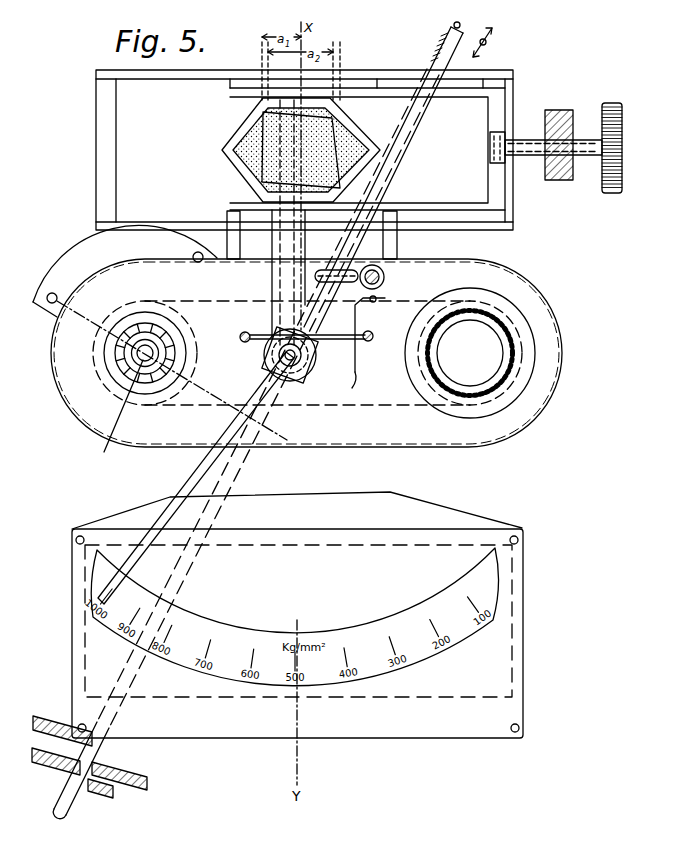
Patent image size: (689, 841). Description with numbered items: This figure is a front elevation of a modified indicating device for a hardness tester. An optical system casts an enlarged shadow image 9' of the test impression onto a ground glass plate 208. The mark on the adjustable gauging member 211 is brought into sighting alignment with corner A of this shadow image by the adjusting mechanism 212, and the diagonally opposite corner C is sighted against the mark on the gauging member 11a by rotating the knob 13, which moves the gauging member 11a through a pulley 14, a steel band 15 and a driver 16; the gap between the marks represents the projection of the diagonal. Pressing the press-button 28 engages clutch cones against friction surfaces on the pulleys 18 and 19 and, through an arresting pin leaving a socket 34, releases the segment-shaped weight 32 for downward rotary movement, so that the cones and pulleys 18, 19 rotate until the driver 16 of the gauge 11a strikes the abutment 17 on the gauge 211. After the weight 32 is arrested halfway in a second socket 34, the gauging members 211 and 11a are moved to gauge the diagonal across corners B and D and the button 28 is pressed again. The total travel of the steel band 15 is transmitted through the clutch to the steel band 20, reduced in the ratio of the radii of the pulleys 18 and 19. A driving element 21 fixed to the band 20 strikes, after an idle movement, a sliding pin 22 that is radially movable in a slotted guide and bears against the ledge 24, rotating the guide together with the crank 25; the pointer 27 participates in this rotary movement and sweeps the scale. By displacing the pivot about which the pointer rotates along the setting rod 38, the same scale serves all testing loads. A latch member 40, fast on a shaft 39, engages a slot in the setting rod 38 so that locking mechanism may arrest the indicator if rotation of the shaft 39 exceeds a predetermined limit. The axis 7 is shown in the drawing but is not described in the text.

The adjustable gauging member 211 is at (122, 118).
The gauging member 11a is at (472, 118).
The adjusting mechanism 212 is at (612, 137).
The shadow image 9' is at (301, 118).
The ground glass plate 208 is at (342, 118).
The setting rod 38 is at (262, 420).
The abutment 17 is at (234, 244).
The driver 16 is at (395, 244).
The crank 25 is at (278, 282).
The socket 34 is at (204, 261).
The steel band 15 is at (393, 450).
The segment-shaped weight 32 is at (83, 253).
The axis 7 is at (48, 295).
The pulley 18 is at (77, 397).
The pulley 19 is at (95, 353).
The press-button 28 is at (117, 416).
The steel band 20 is at (367, 407).
The knob 13 is at (503, 323).
The pulley 14 is at (540, 382).
The sliding pin 22 is at (280, 324).
The ledge 24 is at (306, 326).
The driving element 21 is at (367, 349).
The shaft 39 is at (360, 282).
The latch member 40 is at (384, 275).
The pointer 27 is at (113, 578).